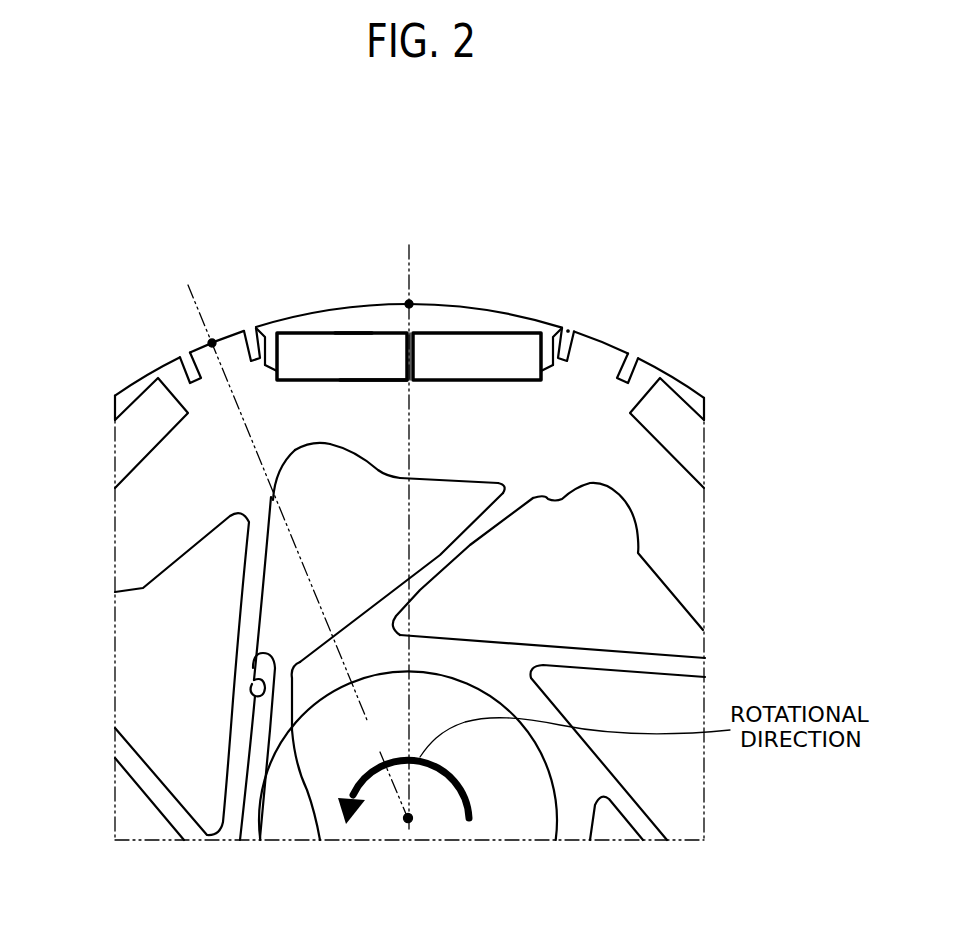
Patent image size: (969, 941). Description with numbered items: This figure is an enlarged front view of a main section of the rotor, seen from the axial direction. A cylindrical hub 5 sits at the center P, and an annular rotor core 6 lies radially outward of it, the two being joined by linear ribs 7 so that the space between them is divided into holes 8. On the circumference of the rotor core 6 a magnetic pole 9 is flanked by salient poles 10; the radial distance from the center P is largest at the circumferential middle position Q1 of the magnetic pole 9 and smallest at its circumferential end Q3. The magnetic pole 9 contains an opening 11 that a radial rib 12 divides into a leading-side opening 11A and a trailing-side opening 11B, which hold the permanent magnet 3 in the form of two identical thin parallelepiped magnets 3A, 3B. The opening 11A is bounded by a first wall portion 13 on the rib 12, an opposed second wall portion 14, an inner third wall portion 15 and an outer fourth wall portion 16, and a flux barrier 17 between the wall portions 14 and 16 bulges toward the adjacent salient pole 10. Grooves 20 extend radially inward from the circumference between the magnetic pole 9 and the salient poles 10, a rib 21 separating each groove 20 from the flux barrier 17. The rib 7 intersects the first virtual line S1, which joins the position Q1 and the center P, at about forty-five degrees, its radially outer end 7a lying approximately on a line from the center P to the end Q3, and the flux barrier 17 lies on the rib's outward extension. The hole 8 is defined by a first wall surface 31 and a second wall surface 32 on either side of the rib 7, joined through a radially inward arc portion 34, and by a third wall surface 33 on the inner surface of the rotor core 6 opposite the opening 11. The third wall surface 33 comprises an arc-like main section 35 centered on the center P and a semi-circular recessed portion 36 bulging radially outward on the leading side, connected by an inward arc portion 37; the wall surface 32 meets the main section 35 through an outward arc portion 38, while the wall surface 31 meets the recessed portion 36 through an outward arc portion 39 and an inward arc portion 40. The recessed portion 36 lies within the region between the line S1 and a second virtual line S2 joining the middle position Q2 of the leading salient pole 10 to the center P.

The permanent magnet 3 is at (409, 286).
The permanent magnet 3A is at (343, 343).
The permanent magnet 3B is at (470, 342).
The hub 5 is at (577, 806).
The rotor core 6 is at (135, 532).
The rib 7 is at (248, 580).
The radially outer end 7a is at (517, 495).
The hole 8 is at (280, 637).
The magnetic pole 9 is at (496, 338).
The salient pole 10 is at (192, 350).
The opening 11 is at (313, 344).
The opening 11A is at (690, 416).
The opening 11B is at (148, 400).
The rib 12 is at (373, 262).
The first wall portion 13 is at (400, 373).
The second wall portion 14 is at (277, 372).
The third wall portion 15 is at (359, 373).
The fourth wall portion 16 is at (350, 335).
The flux barrier 17 is at (262, 333).
The groove 20 is at (566, 348).
The rib 21 is at (552, 355).
The first wall surface 31 is at (240, 840).
The second wall surface 32 is at (320, 840).
The third wall surface 33 is at (443, 476).
The arc portion 34 is at (253, 682).
The main section 35 is at (398, 482).
The recessed portion 36 is at (321, 446).
The arc portion 37 is at (387, 476).
The arc portion 38 is at (488, 481).
The arc portion 39 is at (274, 505).
The arc portion 40 is at (290, 494).
The center P is at (408, 822).
The circumferential middle position Q1 is at (412, 301).
The circumferential middle position Q2 is at (213, 339).
The circumferential end Q3 is at (568, 332).
The first virtual line S1 is at (409, 266).
The second virtual line S2 is at (192, 312).